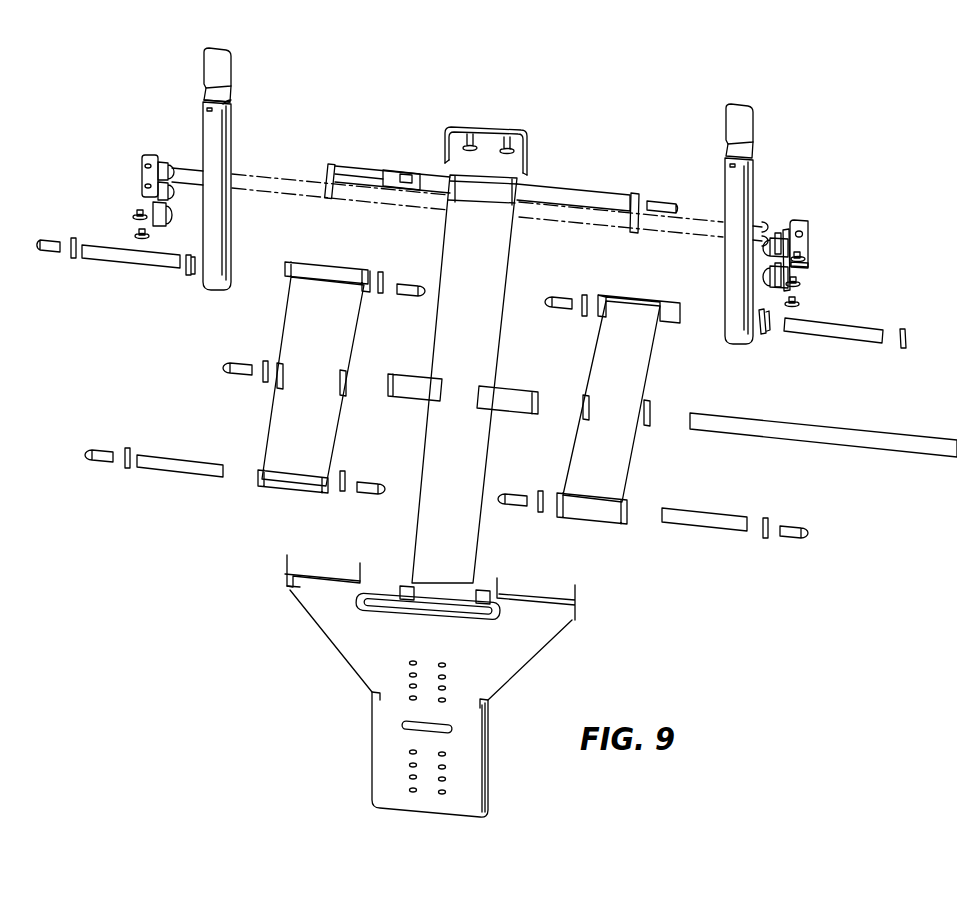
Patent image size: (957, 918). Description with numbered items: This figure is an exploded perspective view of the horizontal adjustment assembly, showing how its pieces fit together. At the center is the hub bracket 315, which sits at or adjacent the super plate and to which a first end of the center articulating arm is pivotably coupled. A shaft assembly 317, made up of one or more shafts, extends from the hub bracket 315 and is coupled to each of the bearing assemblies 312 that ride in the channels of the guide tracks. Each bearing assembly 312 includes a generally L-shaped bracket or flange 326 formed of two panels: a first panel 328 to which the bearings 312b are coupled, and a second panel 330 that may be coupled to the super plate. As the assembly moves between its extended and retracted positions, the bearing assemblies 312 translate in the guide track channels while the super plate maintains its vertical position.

The bearing assembly 312 is at (812, 229).
The bearings 312b is at (777, 234).
The hub bracket 315 is at (520, 130).
The shaft assembly 317 is at (590, 183).
The L-shaped bracket 326 is at (815, 248).
The first panel 328 is at (781, 239).
The second panel 330 is at (792, 222).